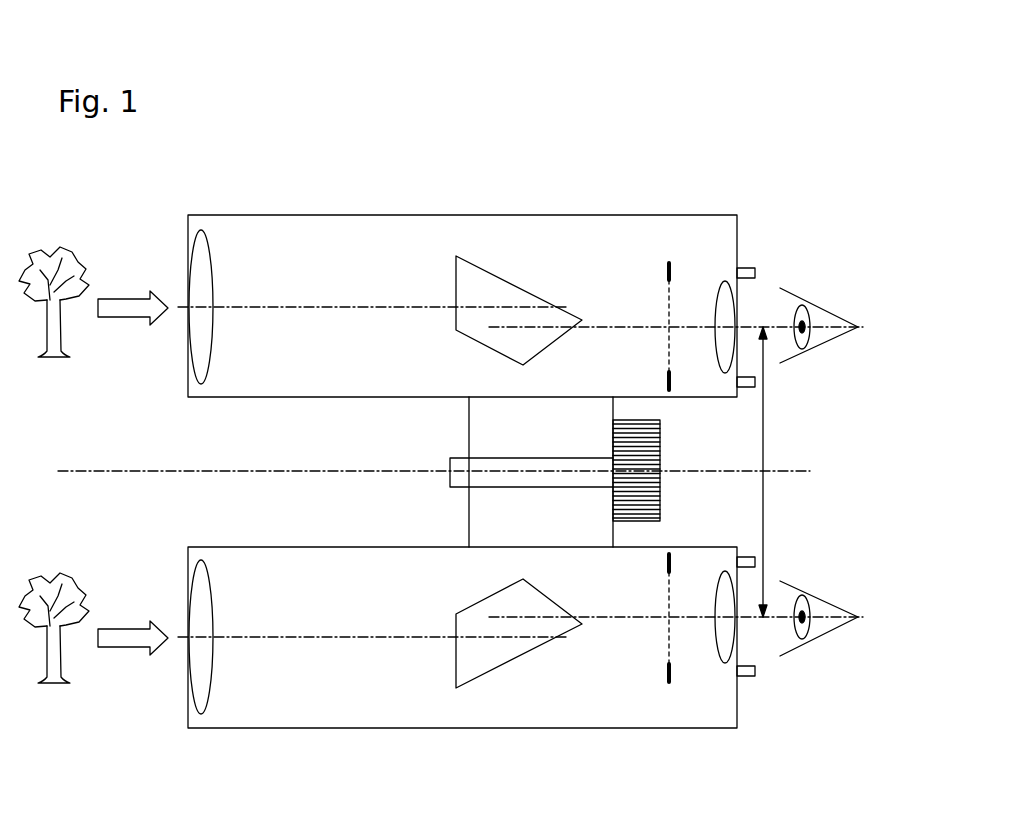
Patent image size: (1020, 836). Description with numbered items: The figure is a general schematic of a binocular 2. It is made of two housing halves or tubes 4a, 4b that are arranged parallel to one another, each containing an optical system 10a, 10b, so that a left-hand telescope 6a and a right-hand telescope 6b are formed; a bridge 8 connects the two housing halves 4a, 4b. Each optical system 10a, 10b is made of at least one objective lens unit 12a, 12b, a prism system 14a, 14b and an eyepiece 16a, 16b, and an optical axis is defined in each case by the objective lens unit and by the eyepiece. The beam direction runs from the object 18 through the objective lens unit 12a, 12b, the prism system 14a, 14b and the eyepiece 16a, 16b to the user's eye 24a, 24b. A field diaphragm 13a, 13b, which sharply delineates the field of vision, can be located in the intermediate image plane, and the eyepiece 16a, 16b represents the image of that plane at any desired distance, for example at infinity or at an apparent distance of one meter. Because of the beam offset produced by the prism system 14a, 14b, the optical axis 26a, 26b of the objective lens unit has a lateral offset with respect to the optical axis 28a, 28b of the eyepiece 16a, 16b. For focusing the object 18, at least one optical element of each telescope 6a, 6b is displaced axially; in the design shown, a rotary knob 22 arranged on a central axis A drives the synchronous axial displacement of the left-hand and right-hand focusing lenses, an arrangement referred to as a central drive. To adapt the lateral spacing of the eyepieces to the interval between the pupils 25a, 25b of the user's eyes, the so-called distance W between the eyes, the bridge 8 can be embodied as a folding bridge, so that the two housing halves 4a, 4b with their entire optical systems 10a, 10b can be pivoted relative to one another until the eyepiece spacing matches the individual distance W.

The binocular 2 is at (669, 84).
The housing half 4a is at (420, 729).
The housing half 4b is at (429, 214).
The left-hand telescope 6a is at (659, 684).
The right-hand telescope 6b is at (659, 254).
The bridge 8 is at (469, 441).
The optical system 10a is at (372, 687).
The optical system 10b is at (372, 251).
The objective lens unit 12a is at (203, 714).
The objective lens unit 12b is at (208, 236).
The field diaphragm 13a is at (669, 683).
The field diaphragm 13b is at (669, 263).
The prism system 14a is at (530, 651).
The prism system 14b is at (512, 283).
The eyepiece 16a is at (727, 664).
The eyepiece 16b is at (727, 281).
The object 18 is at (58, 250).
The rotary knob 22 is at (662, 441).
The eye 24a is at (822, 650).
The eye 24b is at (821, 285).
The pupil 25a is at (801, 624).
The pupil 25b is at (802, 270).
The optical axis of the objective lens unit 26a is at (372, 663).
The optical axis of the objective lens unit 26b is at (341, 305).
The optical axis of the eyepiece 28a is at (625, 619).
The optical axis of the eyepiece 28b is at (608, 325).
The central axis A is at (99, 470).
The distance between the eyes W is at (770, 437).